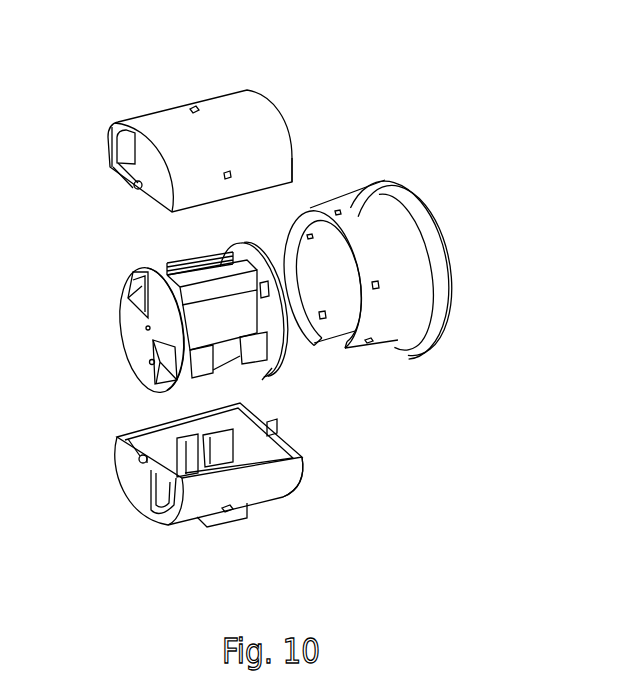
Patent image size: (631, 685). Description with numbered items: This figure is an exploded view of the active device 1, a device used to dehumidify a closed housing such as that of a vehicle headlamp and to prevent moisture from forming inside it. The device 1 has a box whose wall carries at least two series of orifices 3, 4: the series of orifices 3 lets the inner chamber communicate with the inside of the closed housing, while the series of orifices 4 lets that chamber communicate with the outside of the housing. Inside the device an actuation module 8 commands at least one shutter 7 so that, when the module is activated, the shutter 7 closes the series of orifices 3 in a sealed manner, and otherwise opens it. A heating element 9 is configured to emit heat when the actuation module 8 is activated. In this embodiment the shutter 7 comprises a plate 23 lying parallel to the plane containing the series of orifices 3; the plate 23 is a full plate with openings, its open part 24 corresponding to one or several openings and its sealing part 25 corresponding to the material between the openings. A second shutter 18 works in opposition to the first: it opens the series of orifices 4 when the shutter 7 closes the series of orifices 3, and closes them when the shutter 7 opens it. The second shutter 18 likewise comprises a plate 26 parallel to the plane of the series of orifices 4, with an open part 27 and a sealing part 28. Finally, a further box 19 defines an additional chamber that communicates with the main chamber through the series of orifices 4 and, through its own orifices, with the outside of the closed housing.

The active device 1 is at (362, 106).
The series of orifices 3 is at (103, 137).
The series of orifices 4 is at (286, 130).
The shutter 7 is at (122, 327).
The actuation module 8 is at (233, 363).
The heating element 9 is at (115, 437).
The second shutter 18 is at (257, 247).
The box 19 is at (447, 226).
The plate 23 is at (118, 352).
The open part 24 is at (123, 283).
The sealing part 25 is at (156, 310).
The plate 26 is at (290, 352).
The open part 27 is at (263, 290).
The sealing part 28 is at (277, 356).